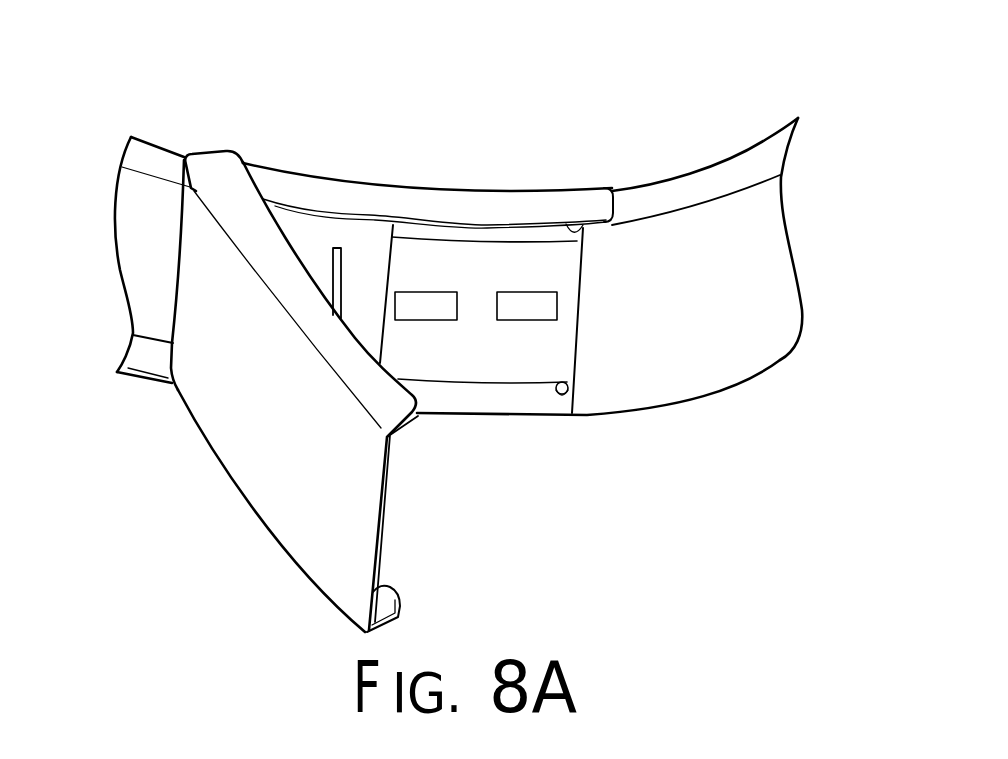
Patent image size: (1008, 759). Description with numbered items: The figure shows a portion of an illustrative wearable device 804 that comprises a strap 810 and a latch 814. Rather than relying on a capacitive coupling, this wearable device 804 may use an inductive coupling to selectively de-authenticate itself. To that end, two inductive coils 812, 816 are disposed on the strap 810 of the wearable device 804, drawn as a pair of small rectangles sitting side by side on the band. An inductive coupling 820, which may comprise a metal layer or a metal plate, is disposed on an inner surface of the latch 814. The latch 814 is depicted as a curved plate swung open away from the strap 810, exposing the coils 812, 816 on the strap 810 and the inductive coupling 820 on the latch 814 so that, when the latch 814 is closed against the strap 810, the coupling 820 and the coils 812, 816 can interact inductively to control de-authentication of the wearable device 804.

The wearable device 804 is at (765, 60).
The strap 810 is at (780, 360).
The inductive coil 812 is at (525, 292).
The latch 814 is at (235, 423).
The inductive coil 816 is at (430, 292).
The inductive coupling 820 is at (383, 485).